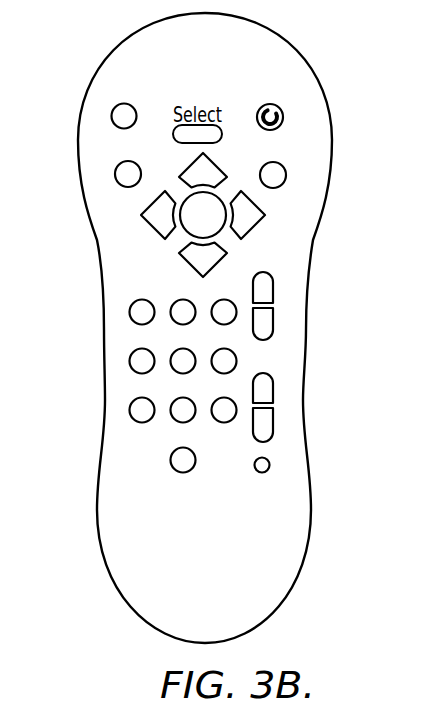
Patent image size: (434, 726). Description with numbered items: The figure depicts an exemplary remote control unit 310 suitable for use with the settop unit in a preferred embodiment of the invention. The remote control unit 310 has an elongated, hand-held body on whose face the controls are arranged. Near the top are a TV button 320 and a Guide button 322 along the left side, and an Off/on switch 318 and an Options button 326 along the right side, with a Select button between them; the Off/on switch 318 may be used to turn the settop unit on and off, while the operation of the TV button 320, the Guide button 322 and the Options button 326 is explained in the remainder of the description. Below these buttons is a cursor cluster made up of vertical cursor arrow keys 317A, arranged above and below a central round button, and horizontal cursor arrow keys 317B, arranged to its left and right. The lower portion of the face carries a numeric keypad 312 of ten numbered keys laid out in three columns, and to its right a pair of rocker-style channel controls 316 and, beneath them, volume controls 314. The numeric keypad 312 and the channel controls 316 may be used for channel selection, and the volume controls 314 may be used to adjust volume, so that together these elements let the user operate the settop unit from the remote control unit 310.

The remote control unit 310 is at (324, 96).
The numeric keypad 312 is at (112, 330).
The volume controls 314 is at (290, 413).
The channel controls 316 is at (288, 323).
The vertical cursor arrow keys 317A is at (229, 177).
The horizontal cursor arrow keys 317B is at (141, 216).
The Off/on switch 318 is at (283, 119).
The TV button 320 is at (112, 114).
The Guide button 322 is at (115, 174).
The Options button 326 is at (286, 174).